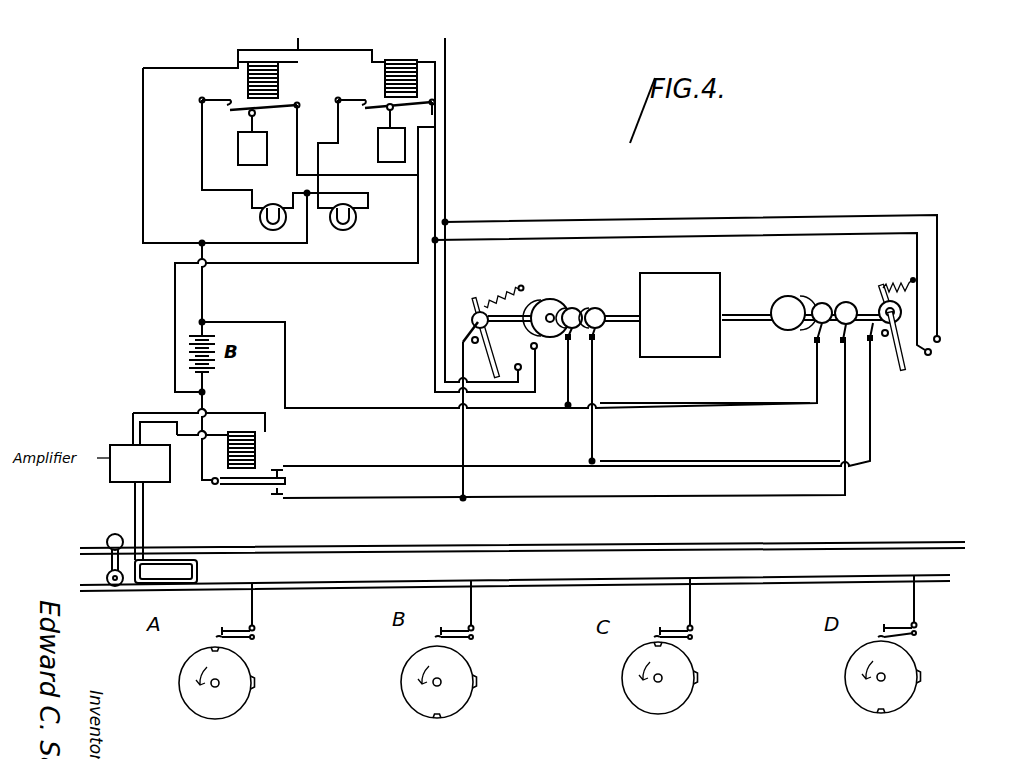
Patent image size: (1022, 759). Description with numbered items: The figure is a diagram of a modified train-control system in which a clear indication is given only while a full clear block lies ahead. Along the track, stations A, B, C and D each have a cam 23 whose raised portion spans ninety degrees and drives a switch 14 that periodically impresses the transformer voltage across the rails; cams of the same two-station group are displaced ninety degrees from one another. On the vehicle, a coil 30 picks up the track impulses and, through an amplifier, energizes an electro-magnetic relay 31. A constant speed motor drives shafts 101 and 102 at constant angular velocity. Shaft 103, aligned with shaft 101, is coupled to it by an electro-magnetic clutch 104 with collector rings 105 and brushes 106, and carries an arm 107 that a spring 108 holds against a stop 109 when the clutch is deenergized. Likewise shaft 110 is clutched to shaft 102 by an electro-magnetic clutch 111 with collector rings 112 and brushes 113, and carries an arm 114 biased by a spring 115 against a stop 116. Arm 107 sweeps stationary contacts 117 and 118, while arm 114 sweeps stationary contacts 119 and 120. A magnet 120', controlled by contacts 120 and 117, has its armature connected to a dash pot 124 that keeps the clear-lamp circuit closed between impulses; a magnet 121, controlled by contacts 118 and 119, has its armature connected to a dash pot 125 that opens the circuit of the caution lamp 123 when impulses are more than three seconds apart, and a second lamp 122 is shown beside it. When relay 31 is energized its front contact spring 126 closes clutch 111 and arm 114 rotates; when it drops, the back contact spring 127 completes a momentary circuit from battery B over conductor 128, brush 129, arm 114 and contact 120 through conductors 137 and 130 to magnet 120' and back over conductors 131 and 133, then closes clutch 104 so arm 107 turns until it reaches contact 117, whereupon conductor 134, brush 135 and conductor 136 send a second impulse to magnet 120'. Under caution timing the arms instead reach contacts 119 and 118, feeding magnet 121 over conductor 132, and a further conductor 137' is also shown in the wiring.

The switch 14 is at (230, 630).
The cam 23 is at (192, 667).
The vehicle coil 30 is at (197, 571).
The electro-magnetic relay 31 is at (262, 452).
The shaft 101 is at (741, 312).
The shaft 102 is at (623, 304).
The shaft 103 is at (851, 301).
The electro-magnetic clutch 104 is at (778, 296).
The collector rings 105 is at (819, 303).
The brushes 106 is at (841, 333).
The arm 107 is at (901, 334).
The spring 108 is at (914, 280).
The stop 109 is at (883, 337).
The shaft 110 is at (527, 298).
The electro-magnetic clutch 111 is at (546, 304).
The collector rings 112 is at (578, 304).
The brushes 113 is at (585, 340).
The arm 114 is at (490, 360).
The spring 115 is at (490, 294).
The stop 116 is at (470, 340).
The stationary contact 117 is at (932, 354).
The stationary contact 118 is at (941, 339).
The stationary contact 119 is at (517, 363).
The stationary contact 120 is at (549, 360).
The magnet 120' is at (460, 215).
The magnet 121 is at (261, 70).
The lamp 122 is at (341, 228).
The caution lamp 123 is at (260, 217).
The dash pot 124 is at (393, 160).
The dash pot 125 is at (238, 148).
The front contact spring 126 is at (294, 469).
The back contact spring 127 is at (263, 489).
The conductor 128 is at (463, 434).
The brush 129 is at (470, 321).
The conductor 130 is at (331, 406).
The conductor 131 is at (317, 50).
The conductor 132 is at (448, 158).
The conductor 133 is at (143, 210).
The conductor 134 is at (651, 463).
The brush 135 is at (876, 286).
The conductor 136 is at (688, 233).
The conductor 137 is at (690, 267).
The conductor 137' is at (410, 316).